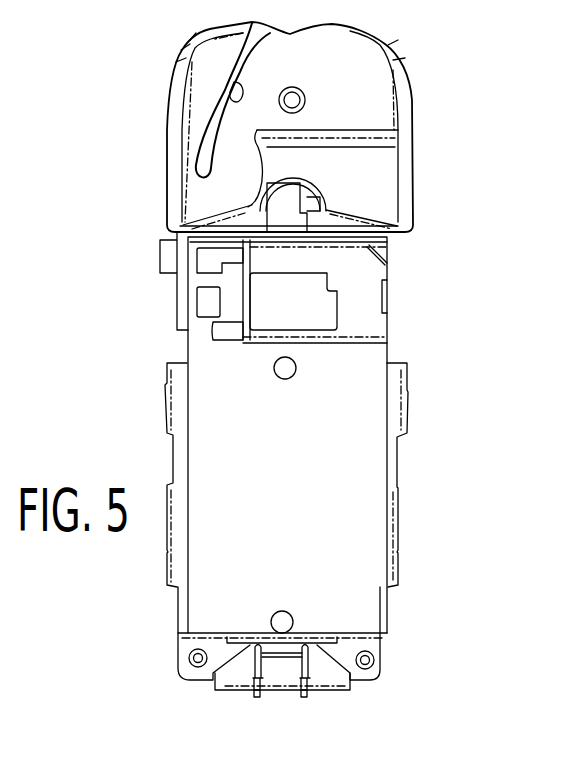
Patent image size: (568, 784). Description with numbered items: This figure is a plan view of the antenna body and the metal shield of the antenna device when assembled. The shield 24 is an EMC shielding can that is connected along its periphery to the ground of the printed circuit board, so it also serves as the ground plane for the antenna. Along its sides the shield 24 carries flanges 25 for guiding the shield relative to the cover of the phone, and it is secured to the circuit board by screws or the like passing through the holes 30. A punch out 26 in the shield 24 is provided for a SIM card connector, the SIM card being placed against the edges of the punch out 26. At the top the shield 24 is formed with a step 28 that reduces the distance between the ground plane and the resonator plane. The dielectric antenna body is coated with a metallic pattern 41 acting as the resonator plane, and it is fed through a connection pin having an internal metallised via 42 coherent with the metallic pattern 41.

The shield 24 is at (367, 455).
The flanges 25 is at (0, 5).
The punch out 26 is at (330, 307).
The step 28 is at (246, 226).
The holes 30 is at (180, 652).
The metallic pattern 41 is at (362, 60).
The metallised via 42 is at (227, 97).